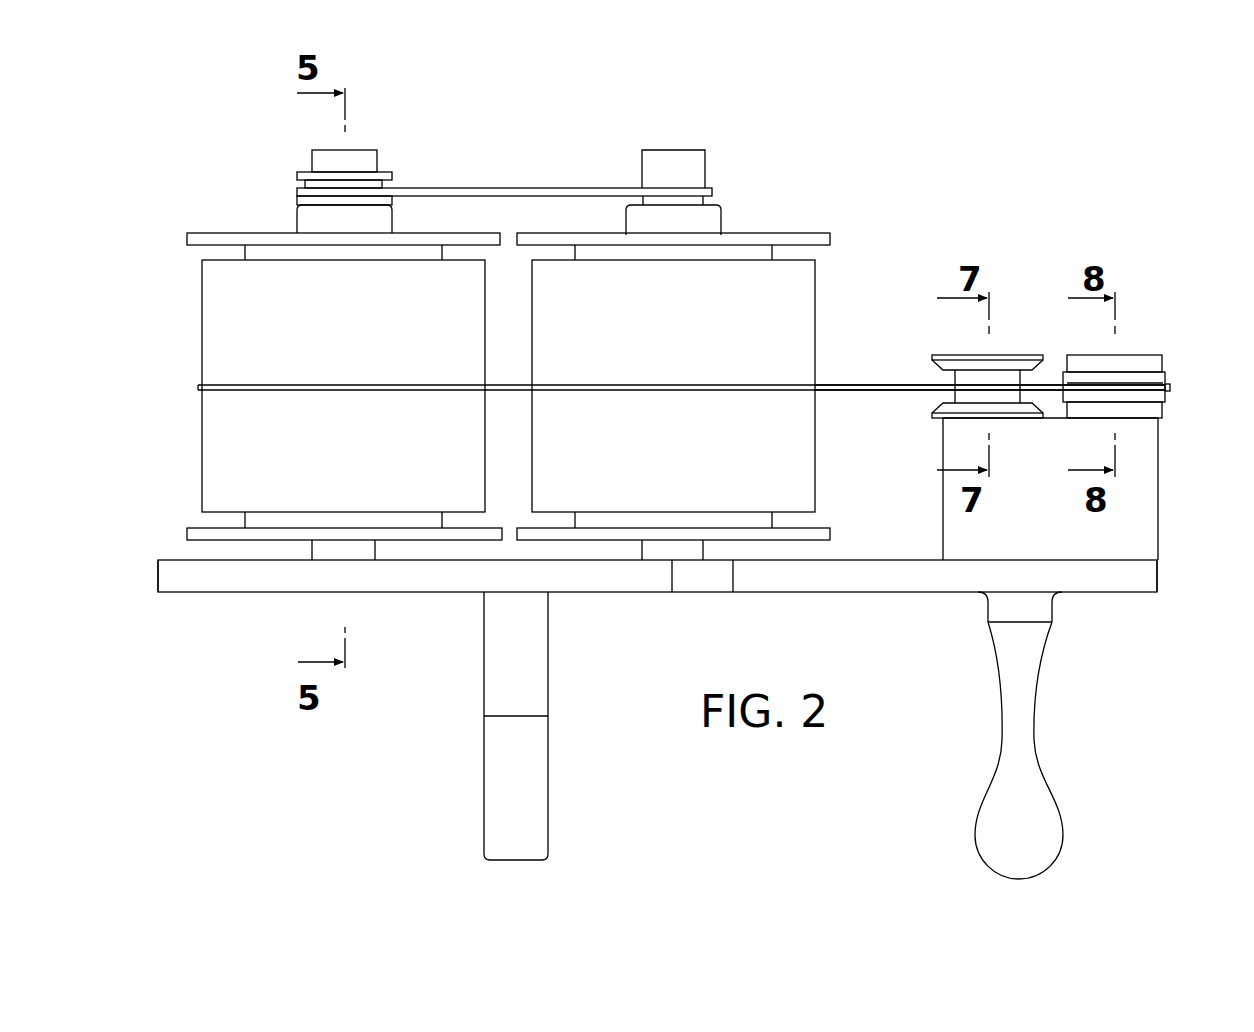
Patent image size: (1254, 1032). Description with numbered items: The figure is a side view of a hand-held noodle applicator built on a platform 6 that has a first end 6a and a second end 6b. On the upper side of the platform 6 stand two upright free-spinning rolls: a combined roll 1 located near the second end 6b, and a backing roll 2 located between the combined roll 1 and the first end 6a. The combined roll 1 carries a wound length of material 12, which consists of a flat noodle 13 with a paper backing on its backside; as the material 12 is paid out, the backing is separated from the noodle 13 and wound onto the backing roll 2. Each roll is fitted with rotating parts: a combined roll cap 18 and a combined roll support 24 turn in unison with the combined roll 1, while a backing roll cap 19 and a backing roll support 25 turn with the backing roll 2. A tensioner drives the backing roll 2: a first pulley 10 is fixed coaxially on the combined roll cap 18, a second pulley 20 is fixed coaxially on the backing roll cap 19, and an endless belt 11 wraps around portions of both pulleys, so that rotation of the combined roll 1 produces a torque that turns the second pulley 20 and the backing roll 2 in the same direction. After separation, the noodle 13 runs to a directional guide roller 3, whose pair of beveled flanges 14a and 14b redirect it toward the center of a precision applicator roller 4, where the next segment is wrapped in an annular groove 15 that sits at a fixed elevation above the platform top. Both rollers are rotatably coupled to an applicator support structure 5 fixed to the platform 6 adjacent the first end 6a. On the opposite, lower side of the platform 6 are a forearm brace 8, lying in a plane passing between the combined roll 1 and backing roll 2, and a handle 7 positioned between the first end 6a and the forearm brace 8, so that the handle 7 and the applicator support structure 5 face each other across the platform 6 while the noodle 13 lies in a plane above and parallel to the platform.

The combined roll 1 is at (198, 320).
The backing roll 2 is at (818, 305).
The directional guide roller 3 is at (960, 393).
The precision applicator roller 4 is at (1163, 366).
The applicator support structure 5 is at (1160, 510).
The platform 6 is at (845, 593).
The first end 6a is at (1158, 575).
The second end 6b is at (158, 577).
The handle 7 is at (1043, 765).
The forearm brace 8 is at (548, 690).
The first pulley 10 is at (297, 172).
The endless belt 11 is at (508, 188).
The length of material 12 is at (258, 390).
The noodle 13 is at (868, 385).
The beveled flange 14a is at (1013, 362).
The beveled flange 14b is at (1022, 408).
The annular groove 15 is at (1130, 385).
The combined roll cap 18 is at (222, 233).
The backing roll cap 19 is at (812, 233).
The second pulley 20 is at (705, 161).
The combined roll support 24 is at (187, 530).
The backing roll support 25 is at (830, 528).